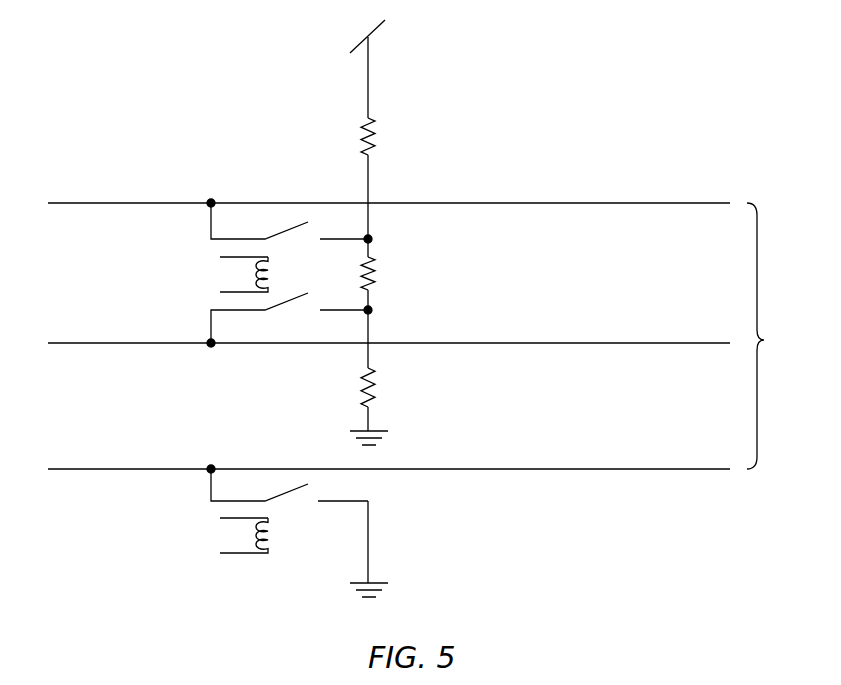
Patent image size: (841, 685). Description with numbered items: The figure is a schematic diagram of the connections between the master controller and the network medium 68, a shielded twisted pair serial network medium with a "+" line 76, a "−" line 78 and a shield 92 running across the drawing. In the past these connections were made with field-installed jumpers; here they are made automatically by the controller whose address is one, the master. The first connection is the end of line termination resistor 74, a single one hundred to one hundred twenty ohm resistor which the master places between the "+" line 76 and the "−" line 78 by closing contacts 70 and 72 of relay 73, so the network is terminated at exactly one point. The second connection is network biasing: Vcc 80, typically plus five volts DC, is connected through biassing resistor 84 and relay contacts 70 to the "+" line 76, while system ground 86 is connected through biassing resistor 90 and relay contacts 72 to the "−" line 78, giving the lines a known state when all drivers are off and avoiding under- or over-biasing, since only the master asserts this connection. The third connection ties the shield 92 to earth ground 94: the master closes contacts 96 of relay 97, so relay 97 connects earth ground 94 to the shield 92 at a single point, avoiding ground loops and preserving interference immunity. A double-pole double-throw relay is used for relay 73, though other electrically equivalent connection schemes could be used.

The network medium 68 is at (775, 336).
The relay contacts 70 is at (280, 233).
The relay contacts 72 is at (270, 309).
The relay 73 is at (226, 268).
The end of line termination resistor 74 is at (388, 274).
The "+" line 76 is at (637, 203).
The "−" line 78 is at (645, 343).
The Vcc 80 is at (446, 33).
The biassing resistor 84 is at (388, 136).
The system ground 86 is at (392, 438).
The biassing resistor 90 is at (388, 390).
The shield 92 is at (644, 469).
The earth ground 94 is at (392, 591).
The relay contacts 96 is at (280, 494).
The relay 97 is at (224, 532).